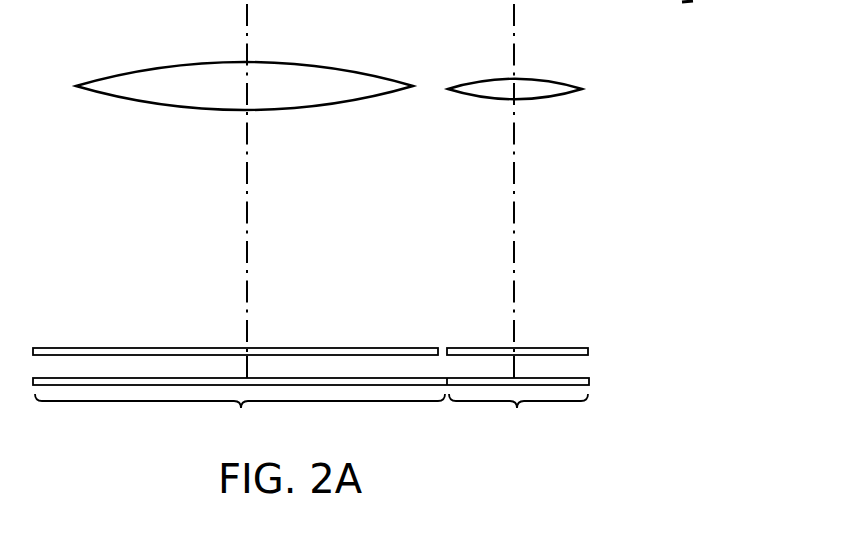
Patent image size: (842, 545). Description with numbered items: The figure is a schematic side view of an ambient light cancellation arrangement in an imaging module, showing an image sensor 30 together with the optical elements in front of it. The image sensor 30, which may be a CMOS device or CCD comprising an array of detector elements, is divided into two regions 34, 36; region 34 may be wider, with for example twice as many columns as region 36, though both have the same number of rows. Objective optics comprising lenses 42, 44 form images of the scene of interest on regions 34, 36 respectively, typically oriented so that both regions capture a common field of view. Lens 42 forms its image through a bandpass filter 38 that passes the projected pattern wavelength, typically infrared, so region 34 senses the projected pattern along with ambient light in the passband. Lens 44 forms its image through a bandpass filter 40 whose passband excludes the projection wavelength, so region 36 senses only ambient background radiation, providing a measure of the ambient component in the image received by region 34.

The image sensor 30 is at (590, 378).
The region 34 is at (240, 416).
The region 36 is at (518, 416).
The bandpass filter 38 is at (53, 348).
The bandpass filter 40 is at (577, 348).
The lens 42 is at (85, 83).
The lens 44 is at (558, 82).